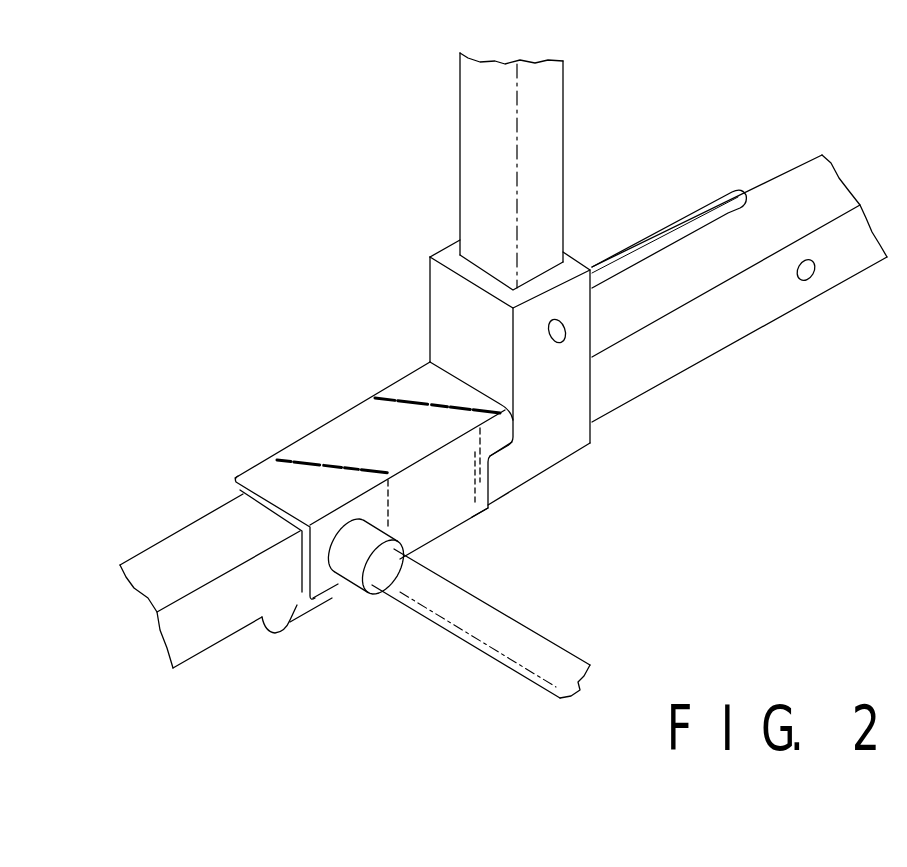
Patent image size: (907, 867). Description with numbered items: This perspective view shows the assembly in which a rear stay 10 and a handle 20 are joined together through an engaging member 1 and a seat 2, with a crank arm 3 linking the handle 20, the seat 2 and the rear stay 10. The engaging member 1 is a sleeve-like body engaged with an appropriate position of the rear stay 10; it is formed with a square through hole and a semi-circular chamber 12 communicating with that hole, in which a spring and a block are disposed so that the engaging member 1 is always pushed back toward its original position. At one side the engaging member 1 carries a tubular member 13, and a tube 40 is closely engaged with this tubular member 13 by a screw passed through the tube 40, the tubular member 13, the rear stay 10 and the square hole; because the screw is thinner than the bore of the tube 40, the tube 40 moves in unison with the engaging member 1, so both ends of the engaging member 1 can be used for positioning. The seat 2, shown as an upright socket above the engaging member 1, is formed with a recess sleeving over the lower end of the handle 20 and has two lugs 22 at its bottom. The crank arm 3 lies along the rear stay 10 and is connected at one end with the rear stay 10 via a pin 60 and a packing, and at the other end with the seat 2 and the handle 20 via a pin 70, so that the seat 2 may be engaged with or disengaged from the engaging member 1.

The engaging member 1 is at (327, 426).
The seat 2 is at (593, 455).
The crank arm 3 is at (653, 232).
The rear stay 10 is at (198, 553).
The semi-circular chamber 12 is at (274, 628).
The tubular member 13 is at (355, 560).
The handle 20 is at (545, 171).
The lugs 22 is at (498, 480).
The tube 40 is at (435, 603).
The pin 60 is at (813, 277).
The pin 70 is at (562, 322).